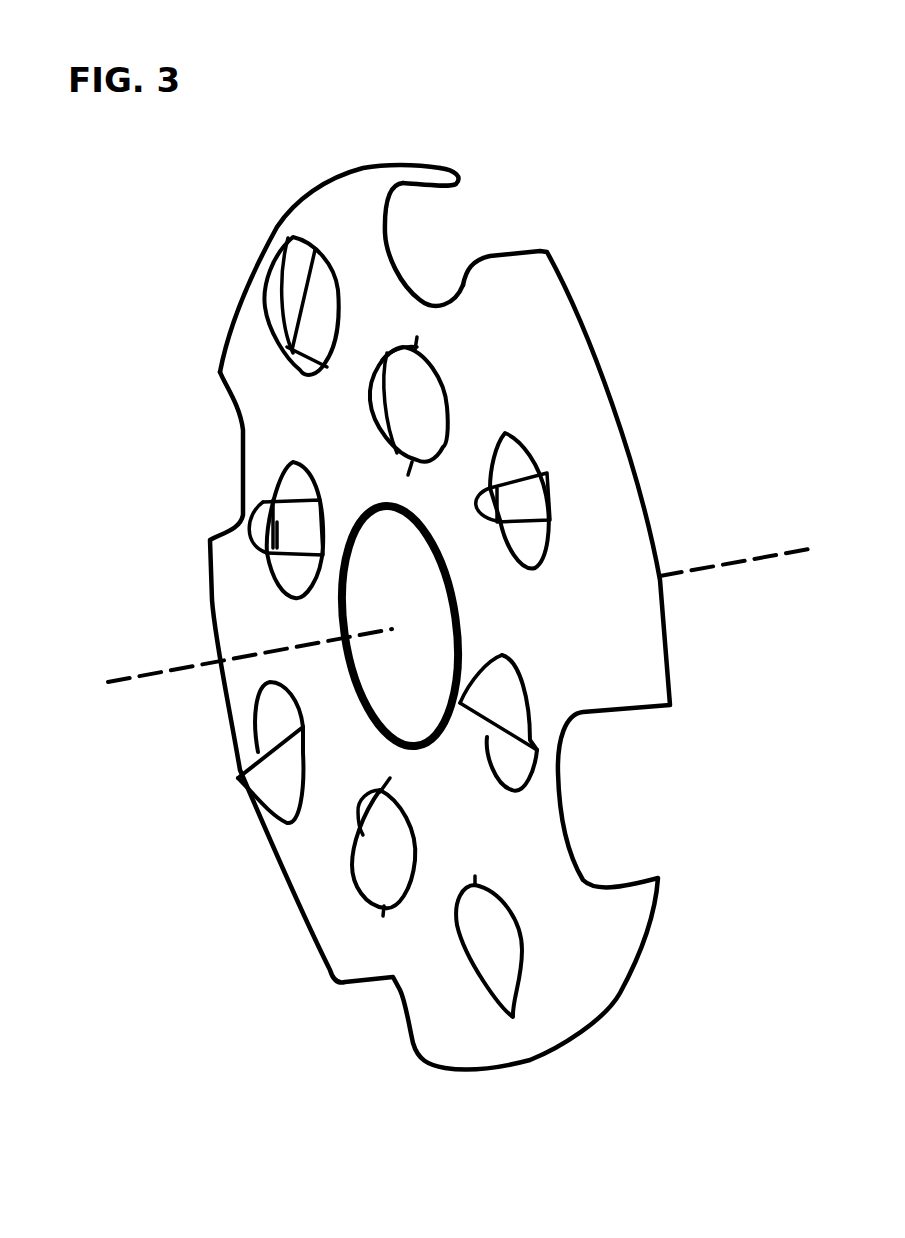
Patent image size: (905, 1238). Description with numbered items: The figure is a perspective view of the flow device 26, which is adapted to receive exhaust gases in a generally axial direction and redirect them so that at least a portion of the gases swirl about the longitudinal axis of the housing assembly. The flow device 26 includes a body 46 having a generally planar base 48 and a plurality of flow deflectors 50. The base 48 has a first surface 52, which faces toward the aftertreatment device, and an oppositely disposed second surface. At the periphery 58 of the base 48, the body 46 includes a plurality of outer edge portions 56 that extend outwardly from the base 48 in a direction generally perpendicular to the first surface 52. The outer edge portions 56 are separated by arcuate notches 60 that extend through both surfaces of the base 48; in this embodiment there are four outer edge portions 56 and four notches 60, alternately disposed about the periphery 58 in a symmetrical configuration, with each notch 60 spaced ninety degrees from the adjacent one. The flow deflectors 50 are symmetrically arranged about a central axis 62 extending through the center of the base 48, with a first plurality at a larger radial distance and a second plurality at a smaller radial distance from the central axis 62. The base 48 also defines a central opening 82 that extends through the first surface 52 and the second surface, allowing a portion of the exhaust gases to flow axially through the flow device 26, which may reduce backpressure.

The flow device 26 is at (257, 195).
The body 46 is at (226, 305).
The base 48 is at (245, 610).
The flow deflectors 50 is at (552, 457).
The first surface 52 is at (470, 817).
The outer edge portions 56 is at (423, 164).
The periphery 58 is at (303, 903).
The notches 60 is at (400, 247).
The central axis 62 is at (718, 557).
The central opening 82 is at (397, 512).